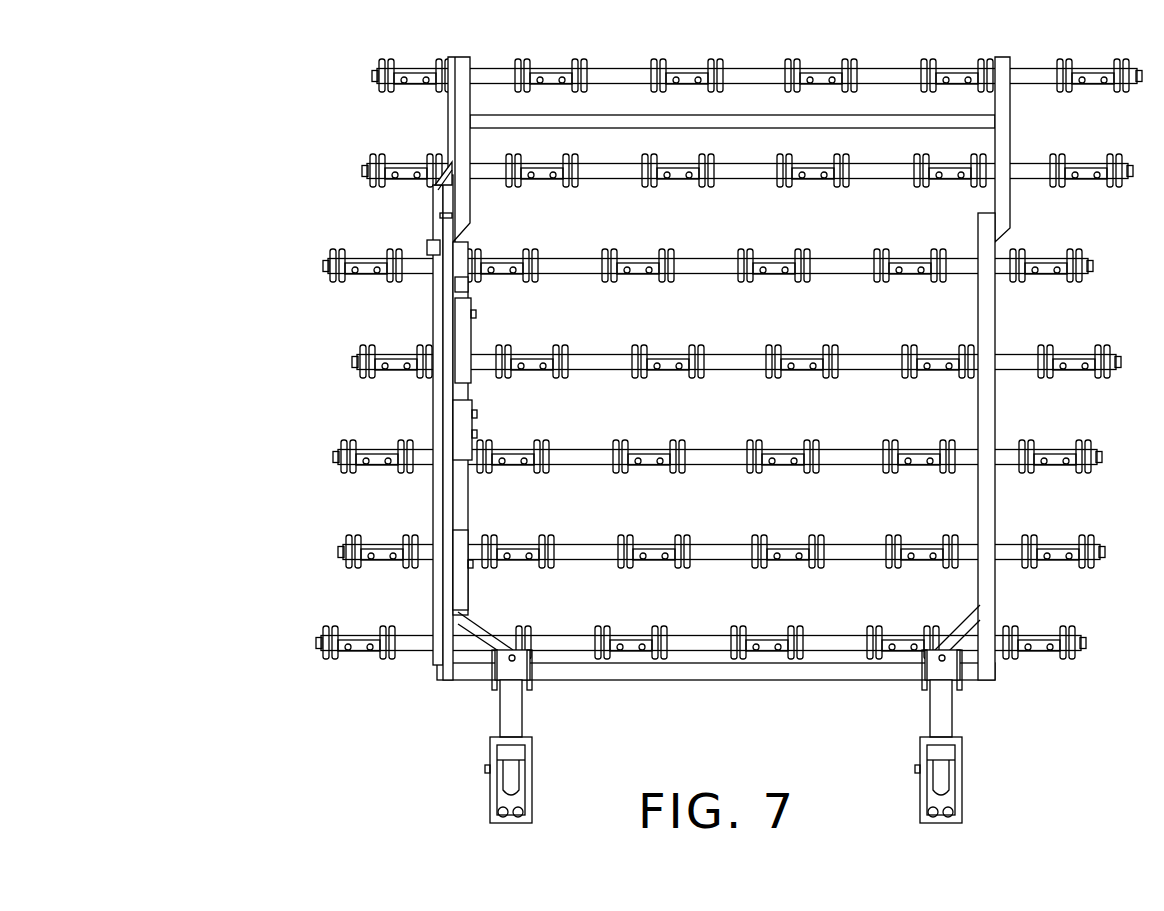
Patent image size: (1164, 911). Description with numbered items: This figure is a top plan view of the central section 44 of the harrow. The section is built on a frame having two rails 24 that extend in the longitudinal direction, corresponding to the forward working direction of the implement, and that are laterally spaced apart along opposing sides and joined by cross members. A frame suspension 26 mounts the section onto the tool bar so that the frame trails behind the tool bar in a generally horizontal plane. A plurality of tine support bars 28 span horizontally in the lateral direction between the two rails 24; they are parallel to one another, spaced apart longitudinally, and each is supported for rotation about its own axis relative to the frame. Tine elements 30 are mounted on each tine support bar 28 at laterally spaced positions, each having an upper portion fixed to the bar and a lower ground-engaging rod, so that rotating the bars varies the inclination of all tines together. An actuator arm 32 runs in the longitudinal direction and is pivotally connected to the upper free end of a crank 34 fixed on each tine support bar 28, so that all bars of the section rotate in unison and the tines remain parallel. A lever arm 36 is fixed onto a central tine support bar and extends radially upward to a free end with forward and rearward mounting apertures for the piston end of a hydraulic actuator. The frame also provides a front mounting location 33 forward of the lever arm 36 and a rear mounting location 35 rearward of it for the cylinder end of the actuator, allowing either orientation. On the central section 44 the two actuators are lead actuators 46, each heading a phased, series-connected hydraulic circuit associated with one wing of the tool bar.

The rail 24 is at (462, 105).
The frame suspension 26 is at (978, 752).
The tine support bar 28 is at (833, 268).
The tine element 30 is at (598, 248).
The actuator arm 32 is at (432, 398).
The front mounting location 33 is at (472, 625).
The crank 34 is at (455, 162).
The rear mounting location 35 is at (458, 283).
The lever arm 36 is at (474, 432).
The central section 44 is at (200, 407).
The lead actuator 46 is at (455, 335).